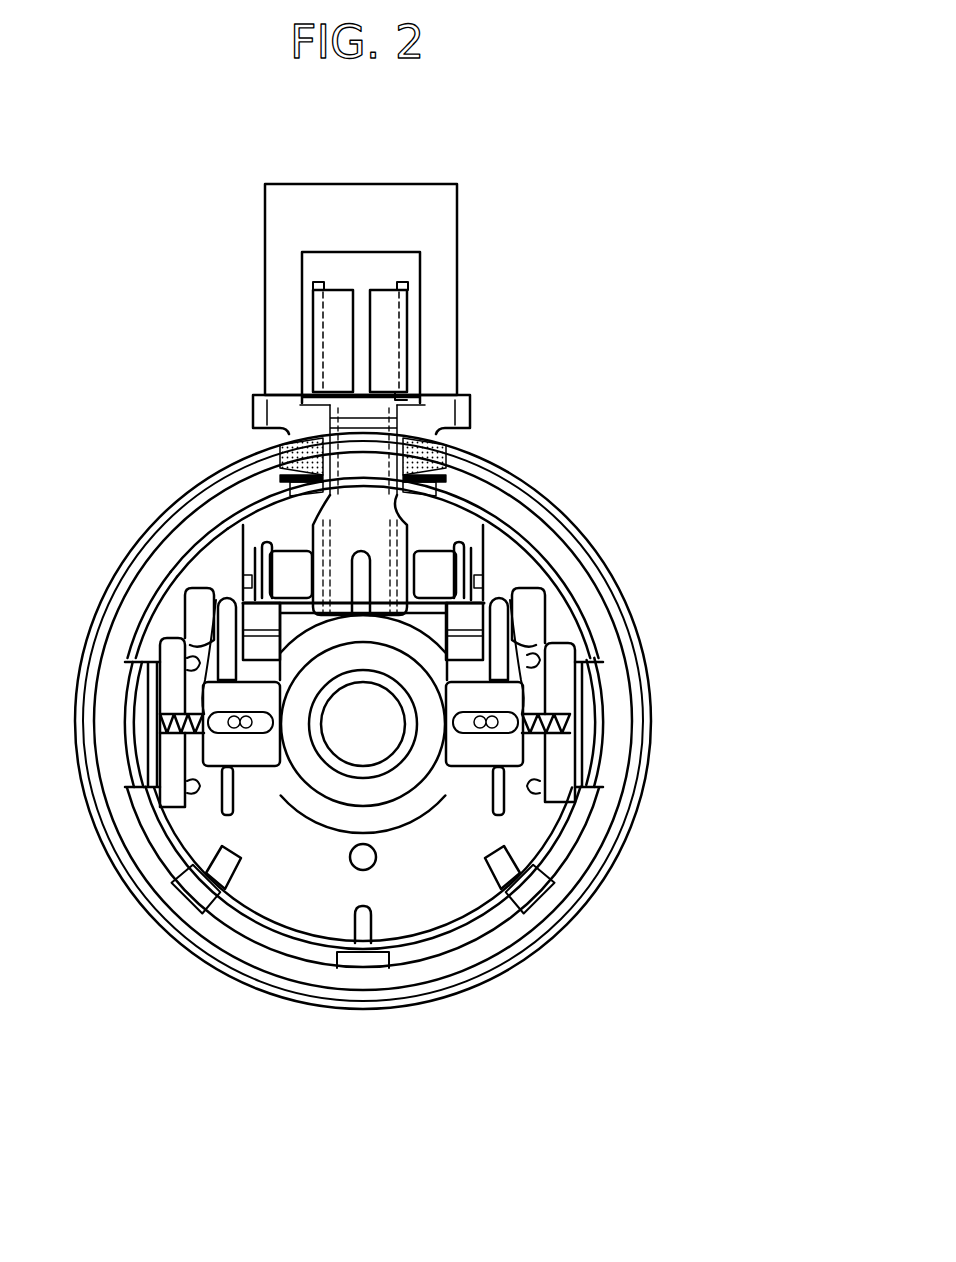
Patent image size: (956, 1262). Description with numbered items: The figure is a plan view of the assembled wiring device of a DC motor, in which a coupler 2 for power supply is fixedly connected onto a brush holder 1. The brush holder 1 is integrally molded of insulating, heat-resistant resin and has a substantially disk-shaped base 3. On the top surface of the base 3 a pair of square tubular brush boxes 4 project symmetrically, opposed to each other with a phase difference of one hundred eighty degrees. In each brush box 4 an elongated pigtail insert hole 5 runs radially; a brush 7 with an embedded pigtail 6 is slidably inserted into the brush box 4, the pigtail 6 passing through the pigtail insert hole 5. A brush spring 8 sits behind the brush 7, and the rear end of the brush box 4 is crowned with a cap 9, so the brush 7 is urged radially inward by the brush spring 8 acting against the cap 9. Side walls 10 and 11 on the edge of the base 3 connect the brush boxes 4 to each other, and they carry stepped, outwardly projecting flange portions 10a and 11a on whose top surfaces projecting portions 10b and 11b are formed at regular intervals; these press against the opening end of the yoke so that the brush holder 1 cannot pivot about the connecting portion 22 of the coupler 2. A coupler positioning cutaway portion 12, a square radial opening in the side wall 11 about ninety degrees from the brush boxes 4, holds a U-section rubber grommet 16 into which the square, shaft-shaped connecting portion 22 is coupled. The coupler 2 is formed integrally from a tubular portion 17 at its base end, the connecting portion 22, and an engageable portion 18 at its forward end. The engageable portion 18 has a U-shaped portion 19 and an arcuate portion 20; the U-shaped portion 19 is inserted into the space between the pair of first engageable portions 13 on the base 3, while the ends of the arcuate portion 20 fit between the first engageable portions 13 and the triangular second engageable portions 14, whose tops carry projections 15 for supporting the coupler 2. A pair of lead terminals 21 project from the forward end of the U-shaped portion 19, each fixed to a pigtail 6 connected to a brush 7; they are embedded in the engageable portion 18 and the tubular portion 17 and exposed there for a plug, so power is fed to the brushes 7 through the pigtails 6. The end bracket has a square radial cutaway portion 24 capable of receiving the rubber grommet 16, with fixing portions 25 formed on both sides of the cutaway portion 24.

The brush holder 1 is at (437, 885).
The coupler 2 is at (335, 215).
The base 3 is at (312, 893).
The brush box 4 is at (523, 760).
The pigtail insert hole 5 is at (220, 745).
The pigtail 6 is at (553, 633).
The brush 7 is at (493, 767).
The brush spring 8 is at (583, 697).
The cap 9 is at (620, 760).
The side wall 10 is at (410, 955).
The flange portion 10a is at (503, 915).
The projecting portions 10b is at (540, 880).
The side wall 11 is at (480, 583).
The flange portion 11a is at (160, 602).
The projecting portions 11b is at (195, 553).
The coupler positioning cutaway portion 12 is at (462, 448).
The first engageable portions 13 is at (300, 568).
The second engageable portions 14 is at (233, 567).
The projections 15 is at (242, 578).
The rubber grommet 16 is at (430, 472).
The tubular portion 17 is at (460, 262).
The engageable portion 18 is at (268, 515).
The U-shaped portion 19 is at (372, 480).
The arcuate portion 20 is at (507, 527).
The lead terminals 21 is at (415, 398).
The connecting portion 22 is at (353, 463).
The cutaway portion 24 is at (425, 427).
The fixing portions 25 is at (305, 452).